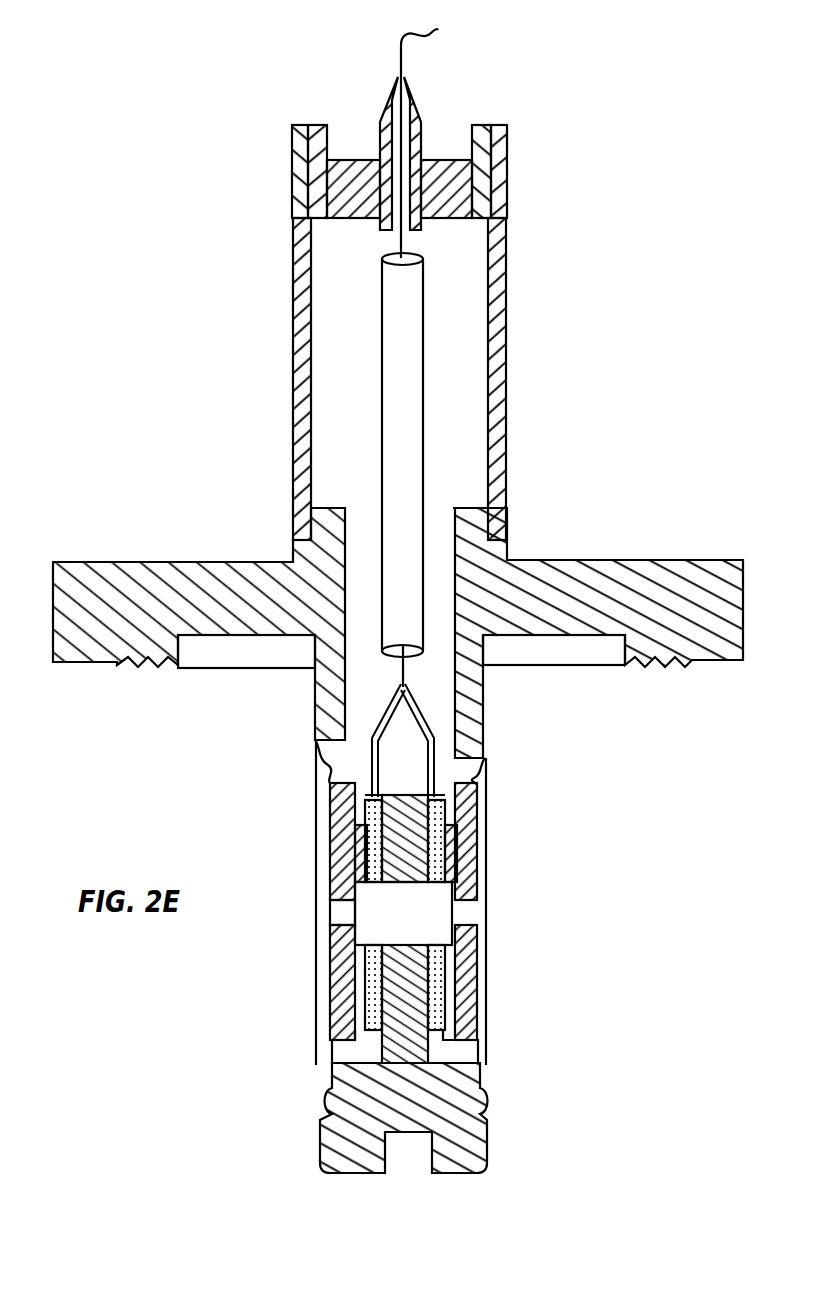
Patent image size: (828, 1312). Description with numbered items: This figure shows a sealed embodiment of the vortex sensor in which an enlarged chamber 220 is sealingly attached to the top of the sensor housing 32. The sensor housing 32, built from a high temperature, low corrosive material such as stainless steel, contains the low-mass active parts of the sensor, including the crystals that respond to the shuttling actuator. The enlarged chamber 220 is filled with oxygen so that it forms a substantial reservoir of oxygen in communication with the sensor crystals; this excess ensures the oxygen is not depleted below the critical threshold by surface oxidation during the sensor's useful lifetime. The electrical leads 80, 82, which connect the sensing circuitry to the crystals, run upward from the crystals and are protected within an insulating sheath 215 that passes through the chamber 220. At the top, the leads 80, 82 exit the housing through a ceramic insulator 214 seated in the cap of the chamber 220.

The ceramic insulator 214 is at (415, 97).
The enlarged chamber 220 is at (458, 387).
The insulating sheath 215 is at (428, 455).
The sensor housing 32 is at (549, 533).
The lead 80 is at (345, 728).
The lead 82 is at (425, 722).